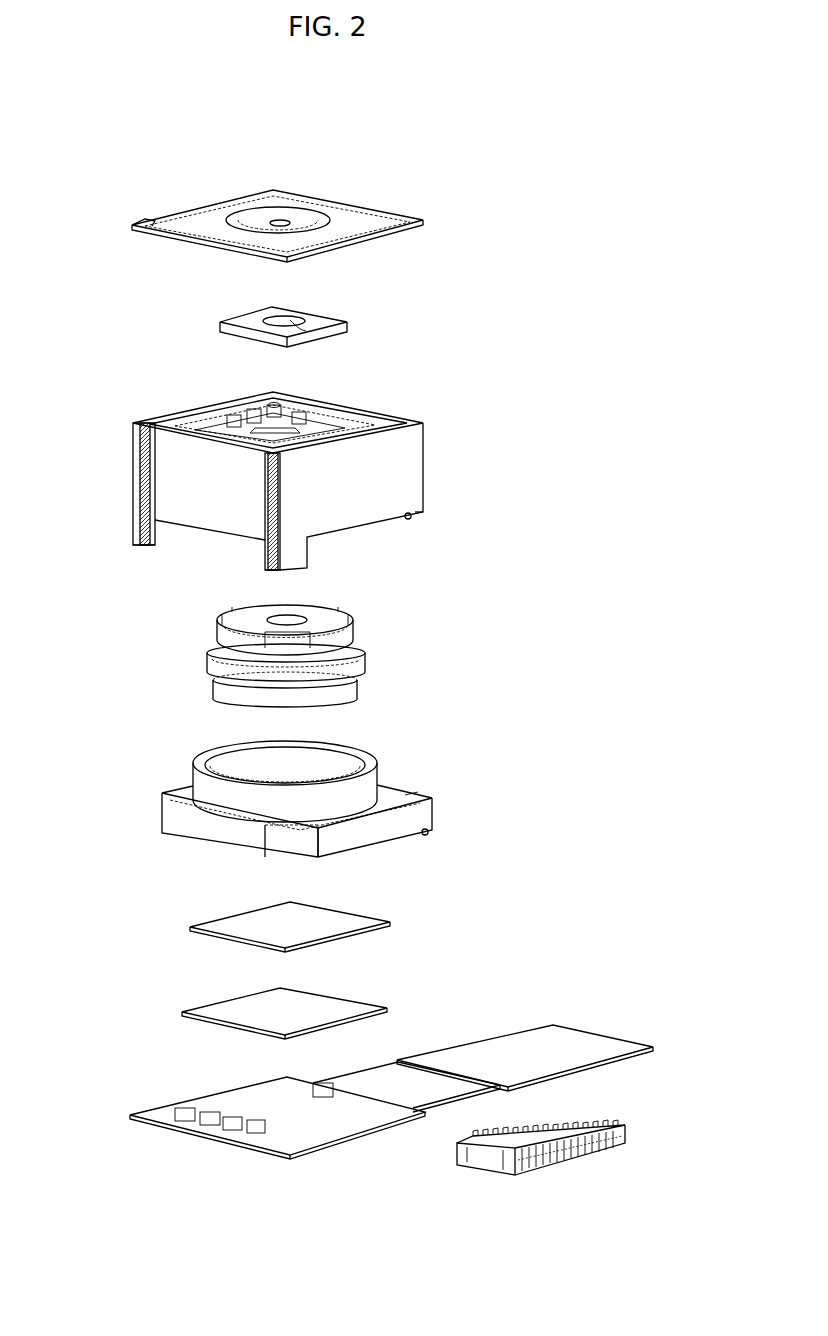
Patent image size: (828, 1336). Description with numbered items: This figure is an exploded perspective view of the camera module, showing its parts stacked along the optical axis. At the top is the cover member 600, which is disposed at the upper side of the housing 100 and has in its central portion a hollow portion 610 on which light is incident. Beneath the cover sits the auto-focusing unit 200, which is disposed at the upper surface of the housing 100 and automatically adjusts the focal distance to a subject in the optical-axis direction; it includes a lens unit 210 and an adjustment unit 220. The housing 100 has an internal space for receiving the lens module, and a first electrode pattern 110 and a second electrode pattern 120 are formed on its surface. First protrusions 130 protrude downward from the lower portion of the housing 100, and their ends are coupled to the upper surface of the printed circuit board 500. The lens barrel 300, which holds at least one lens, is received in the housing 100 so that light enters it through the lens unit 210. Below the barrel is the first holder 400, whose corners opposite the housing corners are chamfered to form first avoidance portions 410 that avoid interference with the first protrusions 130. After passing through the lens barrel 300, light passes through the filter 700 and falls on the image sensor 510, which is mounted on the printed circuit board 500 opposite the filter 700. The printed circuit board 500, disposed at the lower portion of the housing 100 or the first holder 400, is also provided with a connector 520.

The housing 100 is at (267, 486).
The first electrode pattern 110 is at (313, 395).
The second electrode pattern 120 is at (270, 492).
The first protrusions 130 is at (263, 568).
The auto-focusing unit 200 is at (345, 319).
The lens unit 210 is at (297, 338).
The adjustment unit 220 is at (317, 315).
The lens barrel 300 is at (353, 662).
The first holder 400 is at (283, 829).
The first avoidance portions 410 is at (290, 852).
The printed circuit board 500 is at (550, 1043).
The image sensor 510 is at (313, 1008).
The connector 520 is at (577, 1128).
The cover member 600 is at (282, 205).
The hollow portion 610 is at (284, 222).
The filter 700 is at (313, 918).